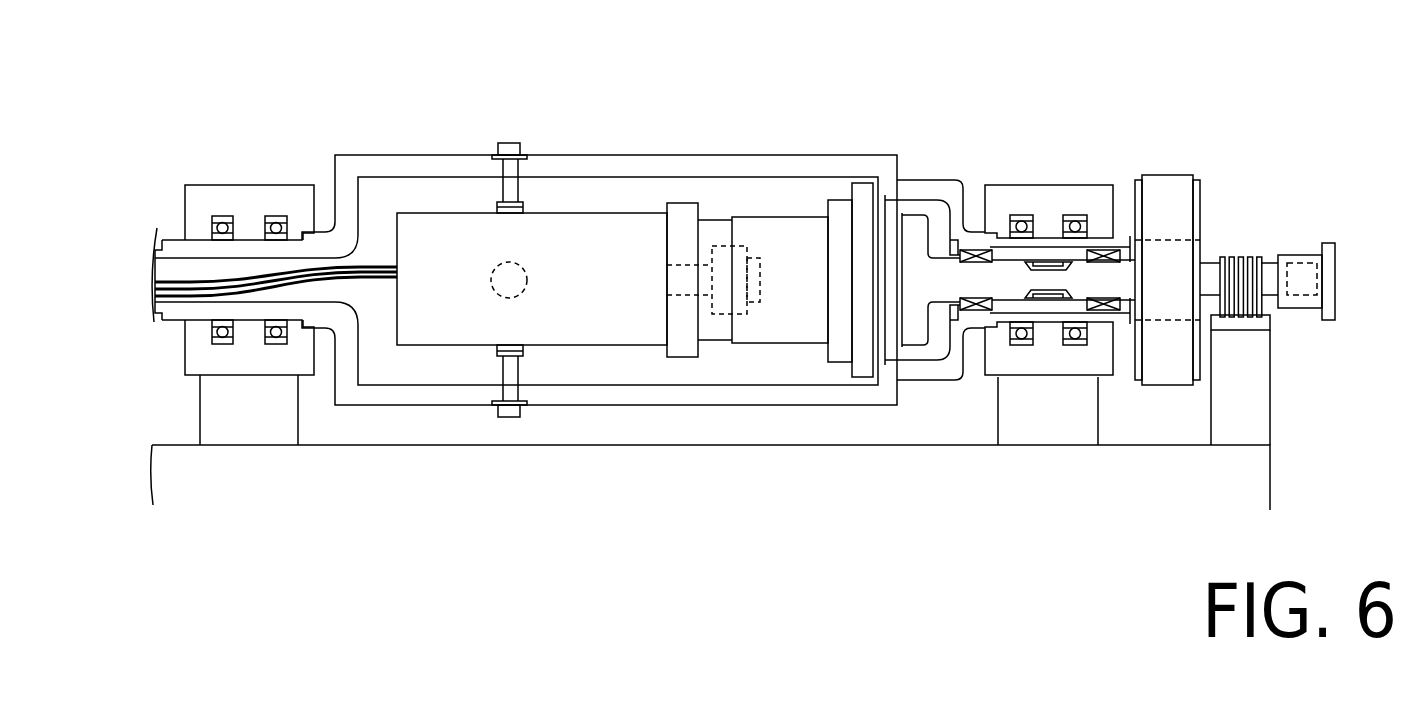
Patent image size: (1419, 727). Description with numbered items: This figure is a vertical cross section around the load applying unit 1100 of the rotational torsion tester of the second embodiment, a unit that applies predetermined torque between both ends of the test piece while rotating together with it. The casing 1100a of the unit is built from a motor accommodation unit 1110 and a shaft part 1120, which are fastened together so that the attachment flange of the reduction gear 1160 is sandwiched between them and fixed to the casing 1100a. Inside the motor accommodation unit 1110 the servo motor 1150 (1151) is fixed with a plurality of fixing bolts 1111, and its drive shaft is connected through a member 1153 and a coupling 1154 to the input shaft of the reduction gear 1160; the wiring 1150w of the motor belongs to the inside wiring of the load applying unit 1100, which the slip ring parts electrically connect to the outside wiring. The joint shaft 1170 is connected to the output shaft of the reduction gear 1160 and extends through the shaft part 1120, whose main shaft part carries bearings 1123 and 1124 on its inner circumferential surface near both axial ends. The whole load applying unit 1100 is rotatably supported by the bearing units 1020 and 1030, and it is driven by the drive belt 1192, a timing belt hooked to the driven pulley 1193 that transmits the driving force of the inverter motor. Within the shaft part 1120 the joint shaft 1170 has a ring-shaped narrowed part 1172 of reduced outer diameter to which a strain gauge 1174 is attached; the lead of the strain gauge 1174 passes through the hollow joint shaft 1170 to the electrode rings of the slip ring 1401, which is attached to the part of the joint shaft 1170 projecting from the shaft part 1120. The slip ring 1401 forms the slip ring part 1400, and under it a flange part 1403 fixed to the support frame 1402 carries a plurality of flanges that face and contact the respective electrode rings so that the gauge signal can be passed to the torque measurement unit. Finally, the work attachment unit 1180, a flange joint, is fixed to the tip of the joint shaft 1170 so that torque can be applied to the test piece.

The load applying unit 1100 is at (690, 140).
The motor accommodation unit 1110 is at (450, 155).
The casing 1100a is at (524, 224).
The fixing bolts 1111 is at (520, 190).
The servo motor 1150 is at (572, 352).
The rotor core 1151 is at (532, 369).
The wiring 1150w is at (172, 278).
The disc 1153 is at (683, 297).
The coupling 1154 is at (740, 315).
The reduction gear 1160 is at (840, 200).
The shaft part 1120 is at (927, 180).
The bearing 1123 is at (975, 312).
The bearing 1124 is at (1103, 312).
The joint shaft 1170 is at (1203, 297).
The bearing unit 1020 is at (1098, 175).
The strain gauge 1174 is at (1047, 262).
The narrowed part 1172 is at (1035, 300).
The drive belt 1192 is at (1162, 175).
The driven pulley 1193 is at (1200, 197).
The slip ring part 1400 is at (1262, 246).
The slip ring 1401 is at (1240, 256).
The work attachment unit 1180 is at (1328, 243).
The flange part 1403 is at (1272, 320).
The support frame 1402 is at (1263, 430).
The bearing unit 1030 is at (250, 182).